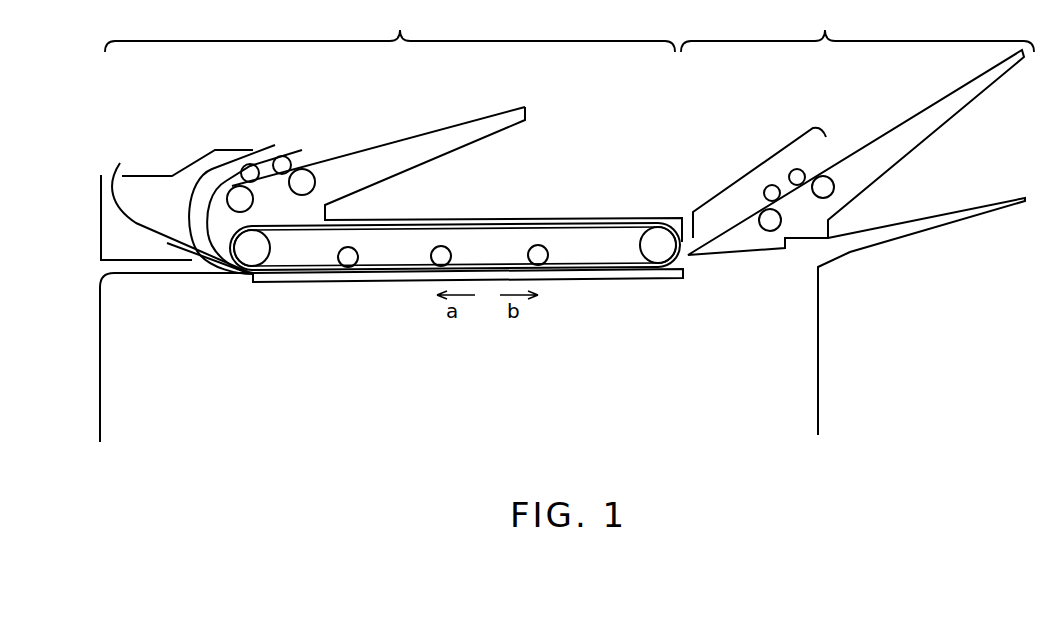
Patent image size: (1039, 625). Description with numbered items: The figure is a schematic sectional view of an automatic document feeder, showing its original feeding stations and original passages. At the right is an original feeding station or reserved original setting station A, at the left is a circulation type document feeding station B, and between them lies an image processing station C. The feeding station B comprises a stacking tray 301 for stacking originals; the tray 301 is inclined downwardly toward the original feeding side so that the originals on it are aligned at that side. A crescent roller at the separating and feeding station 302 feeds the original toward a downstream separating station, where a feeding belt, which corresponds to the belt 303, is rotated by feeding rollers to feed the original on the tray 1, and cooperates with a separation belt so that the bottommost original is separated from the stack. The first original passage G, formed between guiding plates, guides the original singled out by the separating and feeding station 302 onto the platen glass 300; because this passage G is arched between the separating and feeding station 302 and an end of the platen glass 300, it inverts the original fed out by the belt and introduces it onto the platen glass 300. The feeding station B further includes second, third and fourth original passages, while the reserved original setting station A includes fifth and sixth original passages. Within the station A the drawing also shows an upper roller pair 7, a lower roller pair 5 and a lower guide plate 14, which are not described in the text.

The tray 1 is at (940, 108).
The lower conveying roller pair 5 is at (802, 228).
The upper conveying roller pair 7 is at (780, 186).
The lower guide plate 14 is at (957, 218).
The platen glass 300 is at (578, 283).
The stacking tray 301 is at (443, 142).
The separating and feeding station 302 is at (286, 182).
The belt 303 is at (531, 224).
The first original passage G is at (457, 167).
The reserved original setting station A is at (857, 27).
The circulation type document feeding station B is at (390, 27).
The image processing station C is at (688, 398).